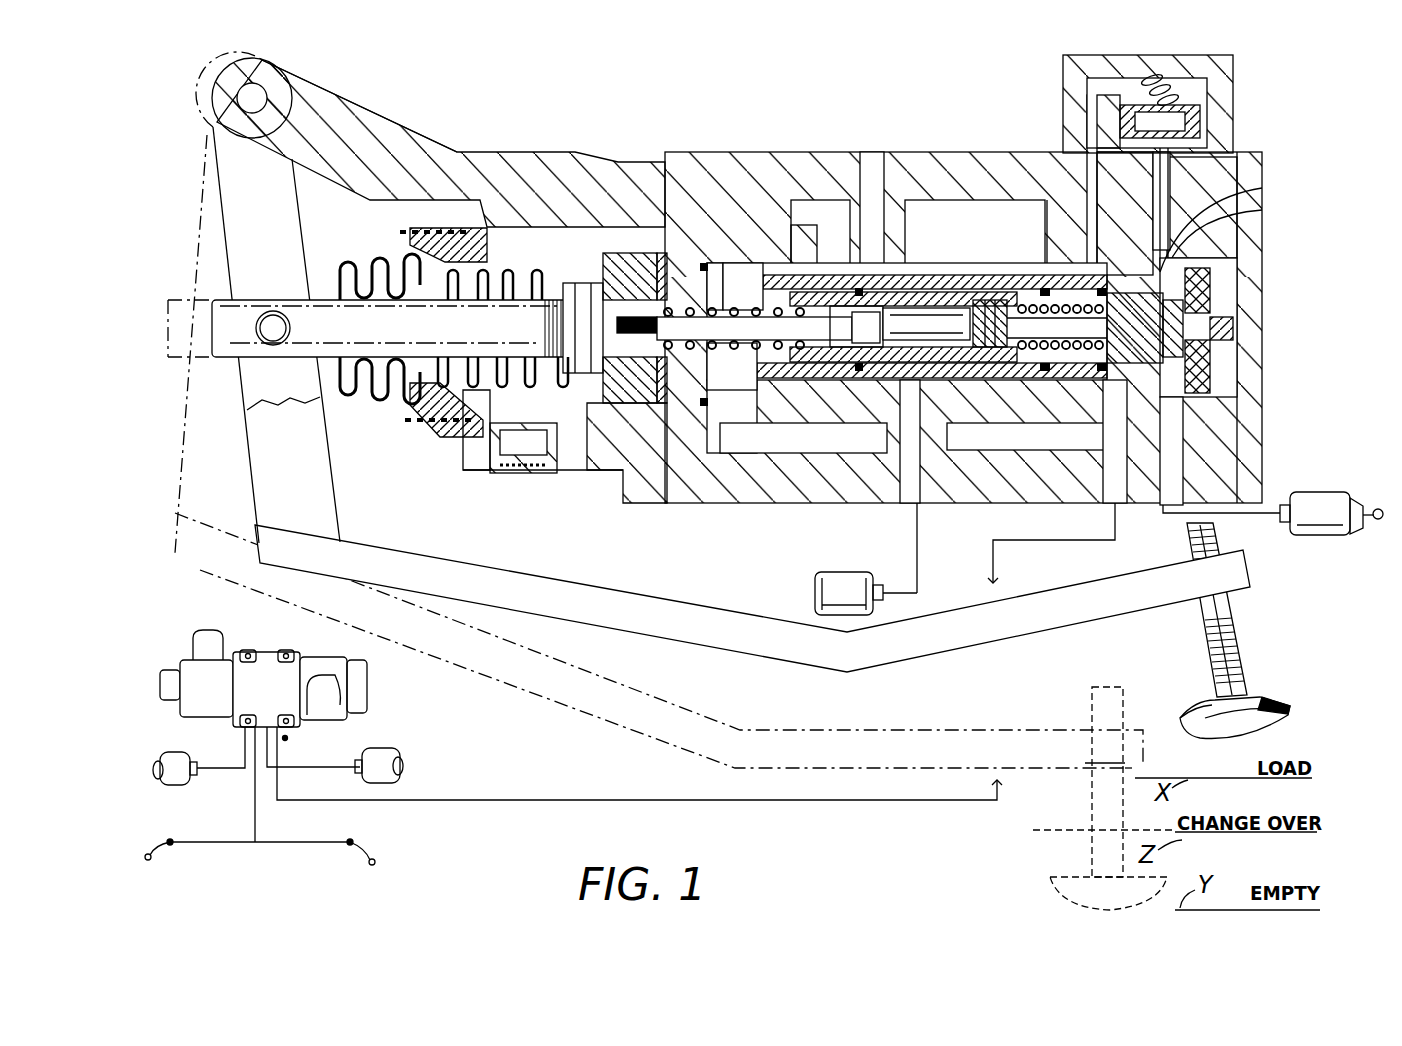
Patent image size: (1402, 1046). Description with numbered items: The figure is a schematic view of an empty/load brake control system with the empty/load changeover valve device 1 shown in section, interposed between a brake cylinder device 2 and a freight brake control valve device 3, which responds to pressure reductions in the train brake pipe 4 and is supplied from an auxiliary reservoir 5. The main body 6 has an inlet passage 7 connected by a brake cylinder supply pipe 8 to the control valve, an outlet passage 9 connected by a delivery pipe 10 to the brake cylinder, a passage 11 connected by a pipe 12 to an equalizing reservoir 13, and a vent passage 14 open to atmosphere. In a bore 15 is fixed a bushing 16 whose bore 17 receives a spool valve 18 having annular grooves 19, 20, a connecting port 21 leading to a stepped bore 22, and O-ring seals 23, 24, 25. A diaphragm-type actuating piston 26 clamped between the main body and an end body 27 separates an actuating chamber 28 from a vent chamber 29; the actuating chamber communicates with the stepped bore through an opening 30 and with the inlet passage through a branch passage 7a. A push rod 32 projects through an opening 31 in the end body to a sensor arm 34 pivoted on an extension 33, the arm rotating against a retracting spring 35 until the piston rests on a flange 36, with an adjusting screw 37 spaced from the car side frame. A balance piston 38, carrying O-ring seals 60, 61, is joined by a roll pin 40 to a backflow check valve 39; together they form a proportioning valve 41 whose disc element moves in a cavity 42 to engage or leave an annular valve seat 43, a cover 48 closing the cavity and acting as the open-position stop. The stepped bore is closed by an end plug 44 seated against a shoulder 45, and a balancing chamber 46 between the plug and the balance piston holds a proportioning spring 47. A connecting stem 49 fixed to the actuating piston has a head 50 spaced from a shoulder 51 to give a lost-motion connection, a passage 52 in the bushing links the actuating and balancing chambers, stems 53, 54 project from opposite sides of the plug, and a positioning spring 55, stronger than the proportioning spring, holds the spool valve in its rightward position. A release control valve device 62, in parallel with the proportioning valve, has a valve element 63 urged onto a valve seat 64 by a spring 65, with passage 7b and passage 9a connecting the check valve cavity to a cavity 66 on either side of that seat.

The empty/load changeover valve device 1 is at (446, 100).
The brake cylinder device 2 is at (1322, 497).
The freight brake control valve device 3 is at (190, 655).
The train brake pipe 4 is at (238, 845).
The auxiliary reservoir 5 is at (170, 752).
The main body 6 is at (683, 162).
The inlet passage 7 is at (1110, 474).
The branch passage 7a is at (1015, 447).
The passage 7b is at (1060, 153).
The brake cylinder supply pipe 8 is at (993, 578).
The outlet passage 9 is at (1170, 441).
The passage 9a is at (1163, 177).
The delivery pipe 10 is at (1243, 518).
The passage 11 is at (900, 462).
The pipe 12 is at (912, 540).
The equalizing reservoir 13 is at (840, 572).
The vent passage 14 is at (866, 163).
The bore 15 is at (1148, 270).
The bushing 16 is at (770, 274).
The bore 17 is at (762, 292).
The spool valve 18 is at (795, 362).
The annular groove 19 is at (855, 362).
The annular groove 20 is at (970, 363).
The connecting port 21 is at (963, 300).
The stepped bore 22 is at (882, 362).
The O-ring seals 23 is at (948, 292).
The O-ring seal 24 is at (834, 268).
The O-ring seal 25 is at (1019, 262).
The actuating piston 26 is at (590, 470).
The end body 27 is at (537, 160).
The actuating chamber 28 is at (690, 412).
The vent chamber 29 is at (548, 418).
The opening 30 is at (769, 327).
The opening 31 is at (421, 354).
The push rod 32 is at (333, 296).
The extension 33 is at (365, 118).
The sensor arm 34 is at (255, 466).
The retracting spring 35 is at (530, 272).
The flange 36 is at (695, 240).
The adjusting screw 37 is at (1285, 706).
The balance piston 38 is at (1110, 270).
The backflow check valve 39 is at (1230, 312).
The roll pin 40 is at (1230, 245).
The proportioning valve 41 is at (1213, 378).
The cavity 42 is at (1225, 347).
The annular valve seat 43 is at (1240, 210).
The end plug 44 is at (1008, 362).
The shoulder 45 is at (990, 300).
The balancing chamber 46 is at (1028, 418).
The proportioning spring 47 is at (1055, 260).
The cover 48 is at (1250, 270).
The connecting stem 49 is at (740, 340).
The head 50 is at (930, 292).
The shoulder 51 is at (893, 292).
The passage 52 is at (822, 200).
The stem 53 is at (937, 341).
The stem 54 is at (1050, 290).
The positioning spring 55 is at (718, 295).
The O-ring seal 60 is at (1036, 362).
The O-ring seal 61 is at (1123, 380).
The release control valve device 62 is at (1060, 87).
The valve element 63 is at (1200, 115).
The valve seat 64 is at (1175, 125).
The spring 65 is at (1180, 85).
The cavity 66 is at (1097, 111).